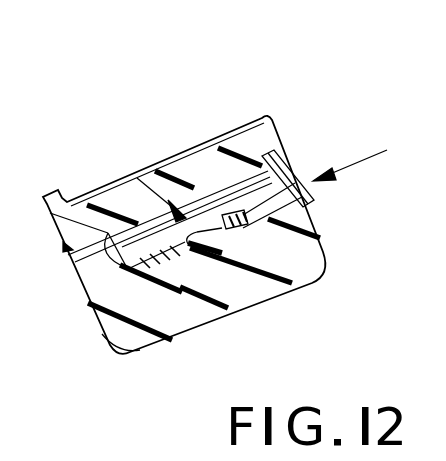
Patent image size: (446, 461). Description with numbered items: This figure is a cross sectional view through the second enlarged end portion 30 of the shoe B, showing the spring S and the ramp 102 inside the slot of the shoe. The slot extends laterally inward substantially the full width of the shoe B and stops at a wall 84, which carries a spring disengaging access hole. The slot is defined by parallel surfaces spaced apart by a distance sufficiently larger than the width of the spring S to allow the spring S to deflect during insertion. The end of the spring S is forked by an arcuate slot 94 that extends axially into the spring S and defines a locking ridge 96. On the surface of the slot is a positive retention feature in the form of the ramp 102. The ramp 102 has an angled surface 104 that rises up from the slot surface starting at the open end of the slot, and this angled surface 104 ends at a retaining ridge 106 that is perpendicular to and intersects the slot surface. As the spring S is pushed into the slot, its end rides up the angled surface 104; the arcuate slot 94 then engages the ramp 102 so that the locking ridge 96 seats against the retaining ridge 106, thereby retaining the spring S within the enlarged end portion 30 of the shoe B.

The second enlarged end portion 30 is at (160, 142).
The wall 84 is at (88, 265).
The arcuate slot 94 is at (239, 207).
The locking ridge 96 is at (198, 290).
The ramp 102 is at (207, 238).
The angled surface 104 is at (212, 228).
The retaining ridge 106 is at (185, 216).
The spring S is at (309, 198).
The shoe B is at (140, 358).